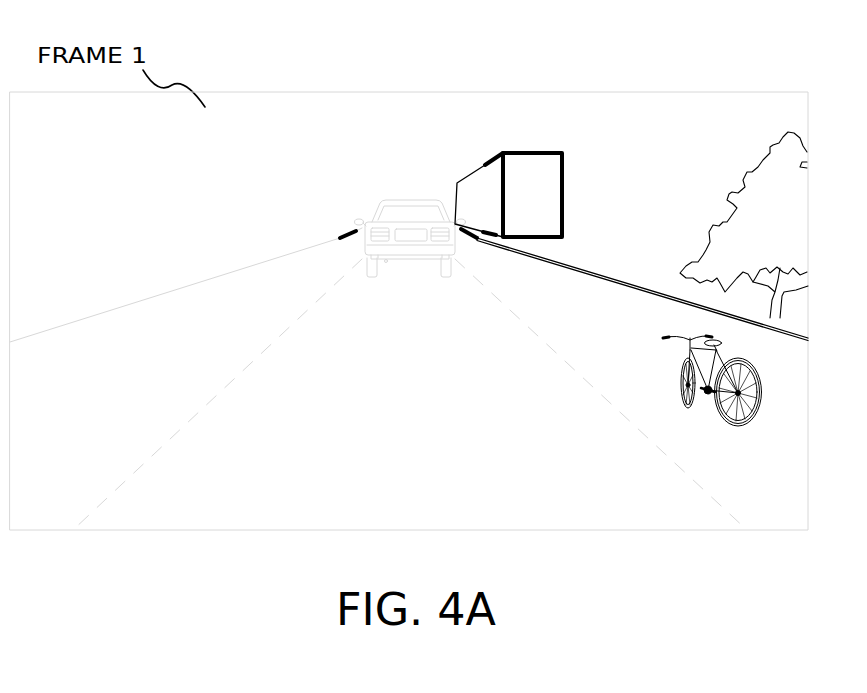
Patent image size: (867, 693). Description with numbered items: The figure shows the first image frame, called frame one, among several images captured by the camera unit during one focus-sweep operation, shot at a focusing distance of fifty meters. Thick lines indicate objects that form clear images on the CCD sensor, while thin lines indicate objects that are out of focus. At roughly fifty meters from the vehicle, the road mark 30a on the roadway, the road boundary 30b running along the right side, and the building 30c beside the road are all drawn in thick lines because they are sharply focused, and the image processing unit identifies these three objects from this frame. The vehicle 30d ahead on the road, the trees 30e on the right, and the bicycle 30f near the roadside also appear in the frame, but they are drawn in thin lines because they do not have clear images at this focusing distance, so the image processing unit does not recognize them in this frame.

The road mark 30a is at (302, 318).
The road boundary 30b is at (593, 274).
The building 30c is at (553, 173).
The vehicle 30d is at (388, 212).
The trees 30e is at (733, 195).
The bicycle 30f is at (683, 384).